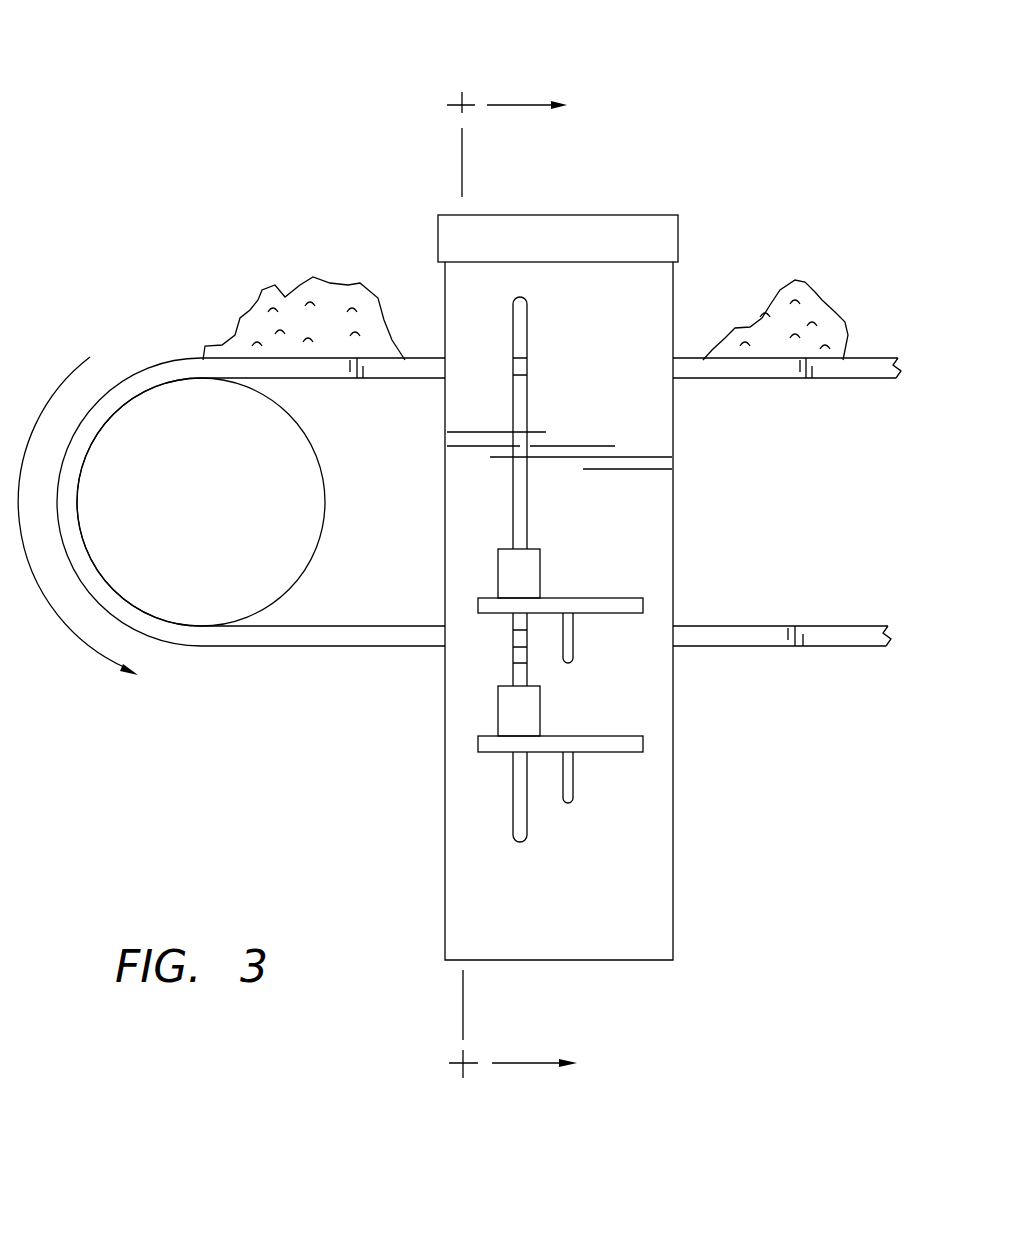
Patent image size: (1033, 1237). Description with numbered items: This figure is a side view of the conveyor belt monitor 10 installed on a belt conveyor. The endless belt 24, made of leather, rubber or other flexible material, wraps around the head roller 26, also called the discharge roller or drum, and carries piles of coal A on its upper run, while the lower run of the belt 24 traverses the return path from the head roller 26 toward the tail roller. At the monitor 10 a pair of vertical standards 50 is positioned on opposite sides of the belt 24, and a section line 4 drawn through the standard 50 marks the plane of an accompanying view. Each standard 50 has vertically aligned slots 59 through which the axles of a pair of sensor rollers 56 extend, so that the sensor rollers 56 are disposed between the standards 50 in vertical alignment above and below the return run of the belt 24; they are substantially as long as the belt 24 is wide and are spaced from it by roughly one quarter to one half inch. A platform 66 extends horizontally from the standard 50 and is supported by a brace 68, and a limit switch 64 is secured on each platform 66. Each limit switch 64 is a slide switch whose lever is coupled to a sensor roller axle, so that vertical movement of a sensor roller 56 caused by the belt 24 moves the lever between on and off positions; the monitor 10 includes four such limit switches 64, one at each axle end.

The monitor 10 is at (318, 128).
The belt 24 is at (312, 382).
The head roller 26 is at (186, 512).
The vertical standards 50 is at (675, 285).
The sensor rollers 56 is at (522, 677).
The vertically aligned slots 59 is at (536, 352).
The limit switch 64 is at (540, 572).
The platform 66 is at (630, 598).
The brace 68 is at (574, 797).
The section line 4- 4 is at (532, 585).
The coal A is at (253, 303).